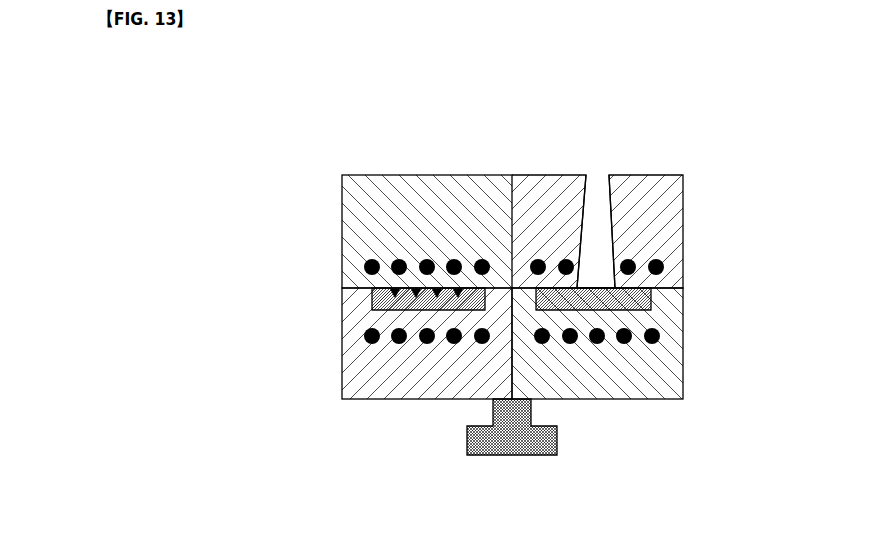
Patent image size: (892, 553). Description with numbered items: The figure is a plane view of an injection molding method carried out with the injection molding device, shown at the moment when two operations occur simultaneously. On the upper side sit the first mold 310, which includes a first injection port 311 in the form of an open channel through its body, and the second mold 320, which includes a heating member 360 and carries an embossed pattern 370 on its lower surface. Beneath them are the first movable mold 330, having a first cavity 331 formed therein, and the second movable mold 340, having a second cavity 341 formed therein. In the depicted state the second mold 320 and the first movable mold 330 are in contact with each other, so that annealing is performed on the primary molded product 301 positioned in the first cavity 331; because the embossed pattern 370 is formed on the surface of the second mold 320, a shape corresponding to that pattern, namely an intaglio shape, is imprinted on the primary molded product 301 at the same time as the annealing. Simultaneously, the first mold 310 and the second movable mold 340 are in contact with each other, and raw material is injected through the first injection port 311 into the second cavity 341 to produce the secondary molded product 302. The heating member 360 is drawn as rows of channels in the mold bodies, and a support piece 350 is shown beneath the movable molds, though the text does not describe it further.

The first mold 310 is at (647, 175).
The first injection port 311 is at (598, 192).
The second mold 320 is at (418, 175).
The first movable mold 330 is at (342, 352).
The second movable mold 340 is at (683, 348).
The primary molded product 301 is at (385, 300).
The secondary molded product 302 is at (640, 299).
The heating member 360 is at (488, 328).
The embossed pattern 370 is at (417, 290).
The first cavity 331 is at (410, 316).
The second cavity 341 is at (592, 316).
The support stem 350 is at (512, 457).